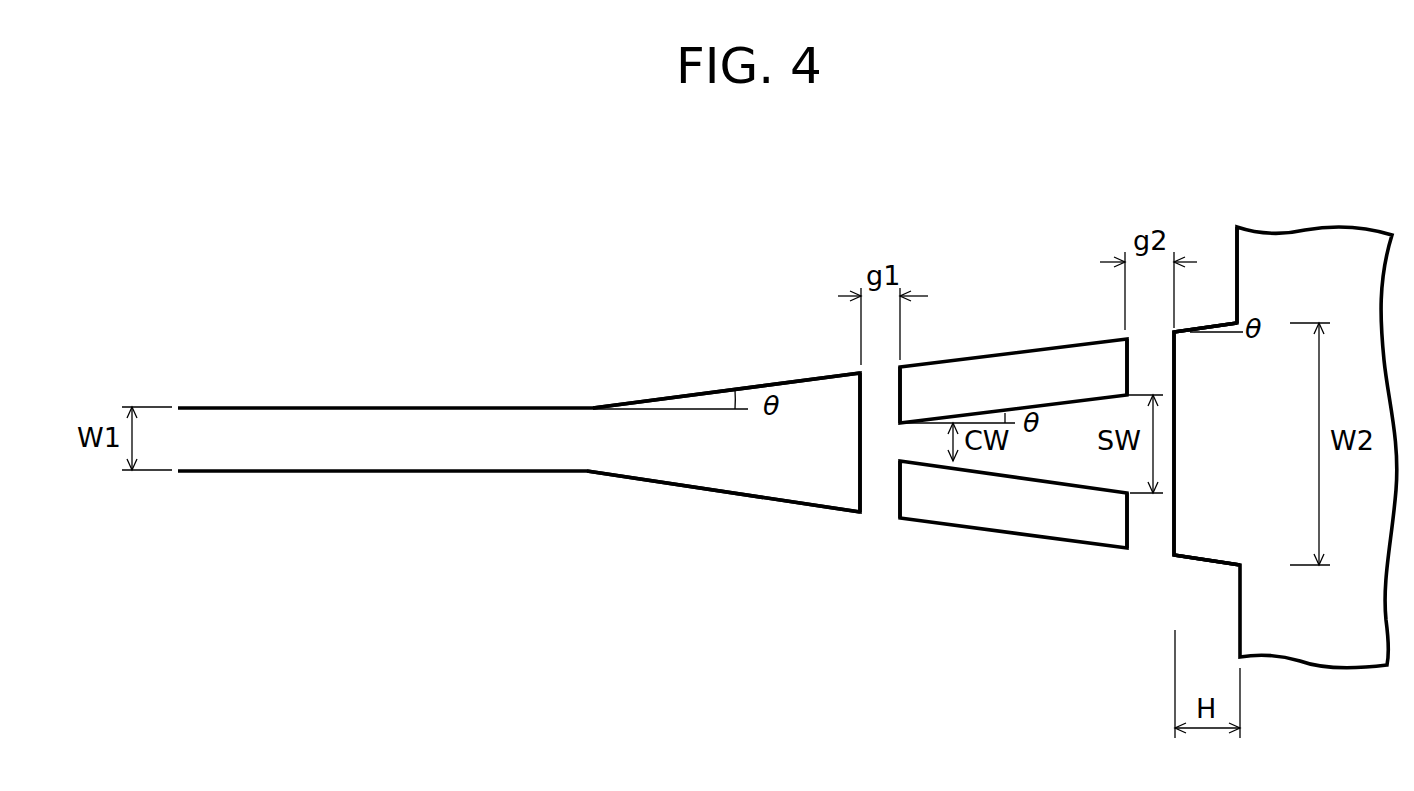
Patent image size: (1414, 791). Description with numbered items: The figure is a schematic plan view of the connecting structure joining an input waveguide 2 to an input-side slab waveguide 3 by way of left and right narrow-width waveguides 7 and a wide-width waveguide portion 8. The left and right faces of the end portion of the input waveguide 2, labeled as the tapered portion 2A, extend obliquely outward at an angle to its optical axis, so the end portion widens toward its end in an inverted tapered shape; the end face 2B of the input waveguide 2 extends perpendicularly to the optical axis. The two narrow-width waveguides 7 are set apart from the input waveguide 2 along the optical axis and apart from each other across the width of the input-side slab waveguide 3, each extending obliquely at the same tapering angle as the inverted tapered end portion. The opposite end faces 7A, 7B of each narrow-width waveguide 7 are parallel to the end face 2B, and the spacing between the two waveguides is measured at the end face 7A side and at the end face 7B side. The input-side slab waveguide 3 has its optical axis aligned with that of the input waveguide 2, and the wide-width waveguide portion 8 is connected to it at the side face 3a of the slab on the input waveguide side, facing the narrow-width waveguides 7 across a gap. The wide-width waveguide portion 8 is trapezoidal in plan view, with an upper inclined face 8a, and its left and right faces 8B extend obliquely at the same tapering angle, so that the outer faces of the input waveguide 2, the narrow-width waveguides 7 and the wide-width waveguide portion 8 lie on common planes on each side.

The input waveguide 2 is at (330, 420).
The tapered portion of waveguide 2A is at (708, 473).
The end face of the input waveguide 2B is at (862, 513).
The input-side slab waveguide 3 is at (1280, 240).
The side face of block 3a is at (1237, 283).
The narrow-width waveguides 7 is at (967, 368).
The end face of narrow-width waveguide 7A is at (900, 506).
The end face of narrow-width waveguide 7B is at (1128, 548).
The wide-width waveguide portion 8 is at (1188, 525).
The upper inclined face of protrusion 8a is at (1171, 356).
The left and right faces of the wide-width waveguide portion 8B is at (1222, 570).